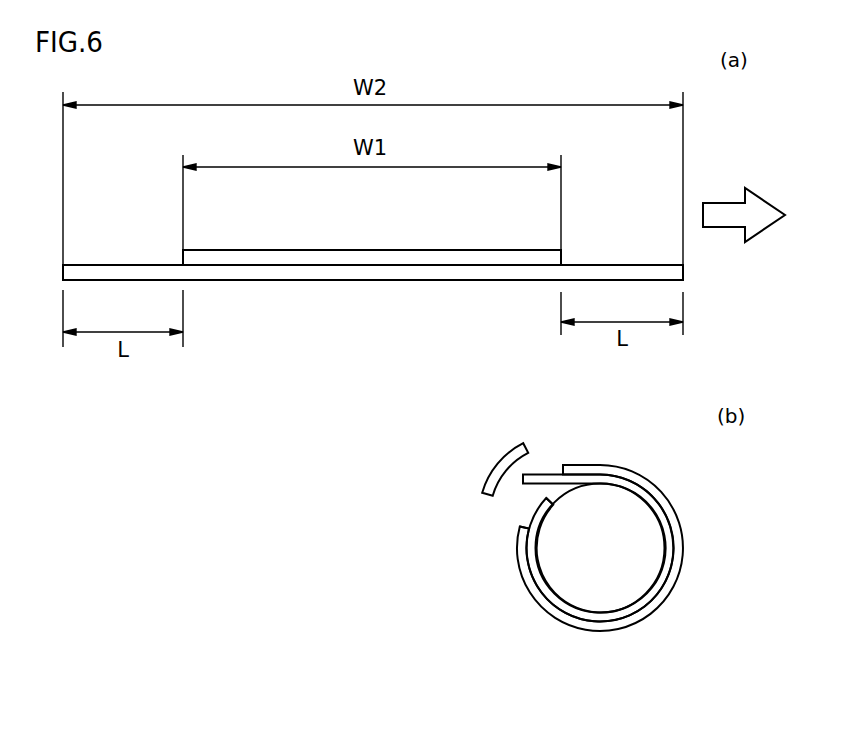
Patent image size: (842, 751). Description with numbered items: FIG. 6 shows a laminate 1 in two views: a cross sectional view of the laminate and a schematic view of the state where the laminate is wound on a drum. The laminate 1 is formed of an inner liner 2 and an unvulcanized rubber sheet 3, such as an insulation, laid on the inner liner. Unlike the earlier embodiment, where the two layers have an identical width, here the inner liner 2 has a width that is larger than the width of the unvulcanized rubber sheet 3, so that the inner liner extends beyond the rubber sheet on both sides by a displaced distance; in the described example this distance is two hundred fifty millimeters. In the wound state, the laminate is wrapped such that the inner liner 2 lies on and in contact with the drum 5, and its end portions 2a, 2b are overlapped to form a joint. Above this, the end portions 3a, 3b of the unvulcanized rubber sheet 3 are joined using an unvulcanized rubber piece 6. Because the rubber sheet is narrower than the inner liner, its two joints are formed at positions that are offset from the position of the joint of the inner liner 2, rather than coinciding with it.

The laminate 1 is at (332, 235).
The inner liner 2 is at (373, 272).
The unvulcanized rubber sheet 3 is at (403, 258).
The drum 5 is at (645, 572).
The unvulcanized rubber piece 6 is at (502, 468).
The end portion of inner liner 2a is at (524, 472).
The end portion of unvulcanized rubber sheet 3a is at (564, 467).
The end portion of inner liner 2b is at (542, 490).
The end portion of unvulcanized rubber sheet 3b is at (519, 519).